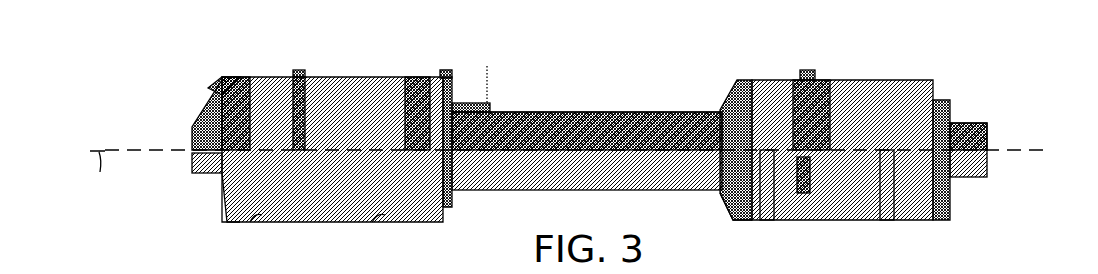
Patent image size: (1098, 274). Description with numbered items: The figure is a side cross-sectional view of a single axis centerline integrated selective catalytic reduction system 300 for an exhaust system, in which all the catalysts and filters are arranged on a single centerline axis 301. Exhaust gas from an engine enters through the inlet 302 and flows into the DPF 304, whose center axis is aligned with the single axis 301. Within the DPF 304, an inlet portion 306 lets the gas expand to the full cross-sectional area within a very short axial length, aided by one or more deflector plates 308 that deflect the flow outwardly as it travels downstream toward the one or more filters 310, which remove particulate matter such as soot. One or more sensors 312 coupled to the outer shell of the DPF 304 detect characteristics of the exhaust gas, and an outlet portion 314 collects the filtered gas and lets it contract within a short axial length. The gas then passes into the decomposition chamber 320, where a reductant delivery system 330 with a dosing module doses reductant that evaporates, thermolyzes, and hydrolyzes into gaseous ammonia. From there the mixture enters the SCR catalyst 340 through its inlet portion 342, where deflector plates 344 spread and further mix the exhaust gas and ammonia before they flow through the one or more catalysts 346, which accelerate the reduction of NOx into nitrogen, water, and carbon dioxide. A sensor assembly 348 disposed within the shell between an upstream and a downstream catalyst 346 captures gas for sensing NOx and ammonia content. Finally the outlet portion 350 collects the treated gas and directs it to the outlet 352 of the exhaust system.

The single axis centerline integrated selective catalytic reduction system 300 is at (988, 70).
The single centerline axis 301 is at (97, 185).
The inlet 302 is at (197, 123).
The DPF 304 is at (327, 73).
The inlet portion 306 is at (224, 205).
The deflector plates 308 is at (224, 172).
The filters 310 is at (256, 212).
The sensors 312 is at (214, 88).
The outlet portion 314 is at (445, 207).
The decomposition chamber 320 is at (500, 192).
The reductant delivery system 330 is at (497, 107).
The SCR catalyst 340 is at (798, 72).
The inlet portion 342 is at (728, 203).
The deflector plates 344 is at (723, 123).
The catalysts 346 is at (765, 208).
The sensor assembly 348 is at (808, 185).
The outlet portion 350 is at (942, 197).
The outlet 352 is at (990, 150).